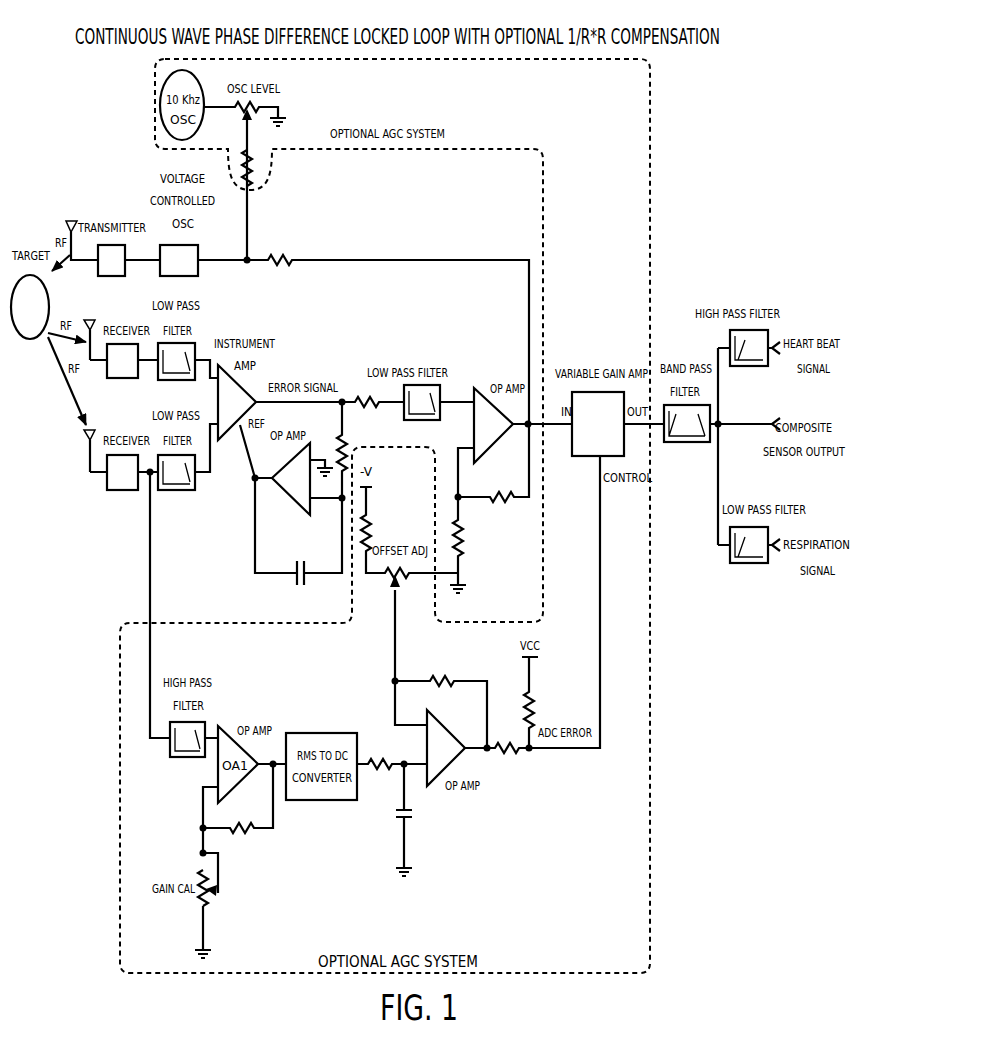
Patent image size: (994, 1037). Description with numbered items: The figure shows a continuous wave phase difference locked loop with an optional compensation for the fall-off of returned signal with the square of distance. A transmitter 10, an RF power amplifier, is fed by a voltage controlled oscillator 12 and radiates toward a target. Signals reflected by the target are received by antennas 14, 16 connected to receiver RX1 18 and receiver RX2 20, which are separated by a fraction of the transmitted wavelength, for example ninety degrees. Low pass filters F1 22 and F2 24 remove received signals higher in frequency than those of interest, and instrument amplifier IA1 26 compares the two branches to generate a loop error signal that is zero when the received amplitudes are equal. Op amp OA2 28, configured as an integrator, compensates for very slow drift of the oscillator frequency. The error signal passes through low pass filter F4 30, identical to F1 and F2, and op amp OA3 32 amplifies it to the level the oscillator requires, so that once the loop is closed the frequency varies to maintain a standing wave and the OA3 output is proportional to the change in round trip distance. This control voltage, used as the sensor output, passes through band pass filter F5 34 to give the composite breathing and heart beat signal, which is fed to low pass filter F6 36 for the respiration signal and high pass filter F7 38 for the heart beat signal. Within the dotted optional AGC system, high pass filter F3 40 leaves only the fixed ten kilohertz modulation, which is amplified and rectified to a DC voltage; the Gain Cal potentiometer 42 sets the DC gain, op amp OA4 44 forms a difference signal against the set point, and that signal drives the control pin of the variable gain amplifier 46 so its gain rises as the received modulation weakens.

The transmitter 10 is at (109, 277).
The voltage controlled oscillator 12 is at (198, 270).
The antenna 14 is at (87, 322).
The antenna 16 is at (88, 441).
The receiver RX1 18 is at (120, 379).
The receiver RX2 20 is at (118, 491).
The low pass filter F1 22 is at (200, 345).
The low pass filter F2 24 is at (170, 491).
The instrument amplifier IA1 26 is at (247, 386).
The op amp OA2 28 is at (292, 505).
The low pass filter F4 30 is at (445, 385).
The op amp OA3 32 is at (485, 390).
The band pass filter F5 34 is at (688, 444).
The low pass filter F6 36 is at (745, 565).
The high pass filter F7 38 is at (773, 340).
The high pass filter F3 40 is at (178, 758).
The Gain Cal potentiometer 42 is at (213, 903).
The op amp OA4 44 is at (432, 792).
The variable gain amplifier 46 is at (572, 452).